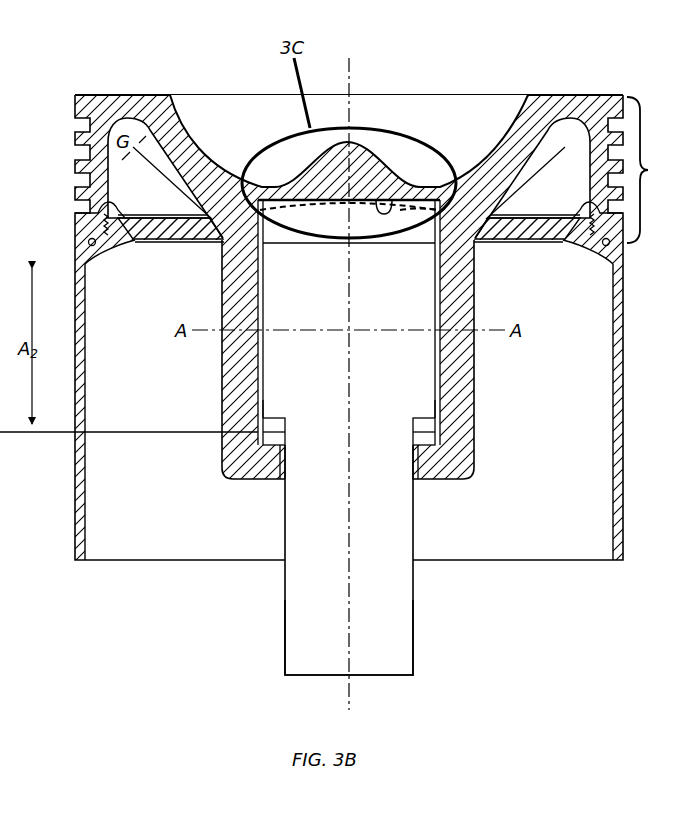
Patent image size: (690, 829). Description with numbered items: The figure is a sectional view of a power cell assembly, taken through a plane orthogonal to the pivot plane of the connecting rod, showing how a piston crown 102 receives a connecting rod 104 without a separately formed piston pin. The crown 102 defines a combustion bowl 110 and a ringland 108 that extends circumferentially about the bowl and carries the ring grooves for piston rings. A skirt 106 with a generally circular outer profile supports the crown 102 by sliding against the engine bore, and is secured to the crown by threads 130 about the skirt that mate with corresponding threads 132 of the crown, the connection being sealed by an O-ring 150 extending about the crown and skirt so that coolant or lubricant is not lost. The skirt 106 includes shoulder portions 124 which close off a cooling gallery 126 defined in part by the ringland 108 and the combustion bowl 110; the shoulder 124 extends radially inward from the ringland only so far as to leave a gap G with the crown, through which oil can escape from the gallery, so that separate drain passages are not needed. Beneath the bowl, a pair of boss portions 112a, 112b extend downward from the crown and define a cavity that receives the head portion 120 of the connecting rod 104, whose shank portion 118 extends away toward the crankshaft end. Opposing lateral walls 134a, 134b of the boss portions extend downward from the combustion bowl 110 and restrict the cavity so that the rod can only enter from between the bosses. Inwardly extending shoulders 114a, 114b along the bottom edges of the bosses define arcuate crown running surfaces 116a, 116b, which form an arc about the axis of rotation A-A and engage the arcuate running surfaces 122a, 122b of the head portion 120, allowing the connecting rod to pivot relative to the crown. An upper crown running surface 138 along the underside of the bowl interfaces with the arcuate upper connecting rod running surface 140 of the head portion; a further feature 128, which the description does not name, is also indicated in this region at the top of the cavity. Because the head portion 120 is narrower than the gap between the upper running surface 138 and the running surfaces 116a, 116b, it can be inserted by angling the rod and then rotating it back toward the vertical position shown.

The piston crown 102 is at (100, 97).
The connecting rod 104 is at (400, 540).
The skirt 106 is at (83, 487).
The ringland 108 is at (658, 170).
The combustion bowl 110 is at (225, 110).
The boss portion 112a is at (230, 452).
The boss portion 112b is at (465, 378).
The shoulder 114a is at (260, 473).
The shoulder 114b is at (448, 475).
The crown running surface 116a is at (273, 423).
The crown running surface 116b is at (438, 418).
The shank portion 118 is at (397, 643).
The head portion 120 is at (455, 280).
The connecting rod running surface 122a is at (277, 418).
The connecting rod running surface 122b is at (422, 418).
The shoulder portion 124 is at (182, 228).
The cooling gallery 126 is at (150, 198).
The pin bore upper surface 128 is at (295, 224).
The threads 130 is at (128, 253).
The threads 132 is at (78, 232).
The lateral wall 134a is at (257, 340).
The lateral wall 134b is at (442, 313).
The upper crown running surface 138 is at (390, 210).
The upper connecting rod running surface 140 is at (415, 213).
The O-ring 150 is at (610, 247).